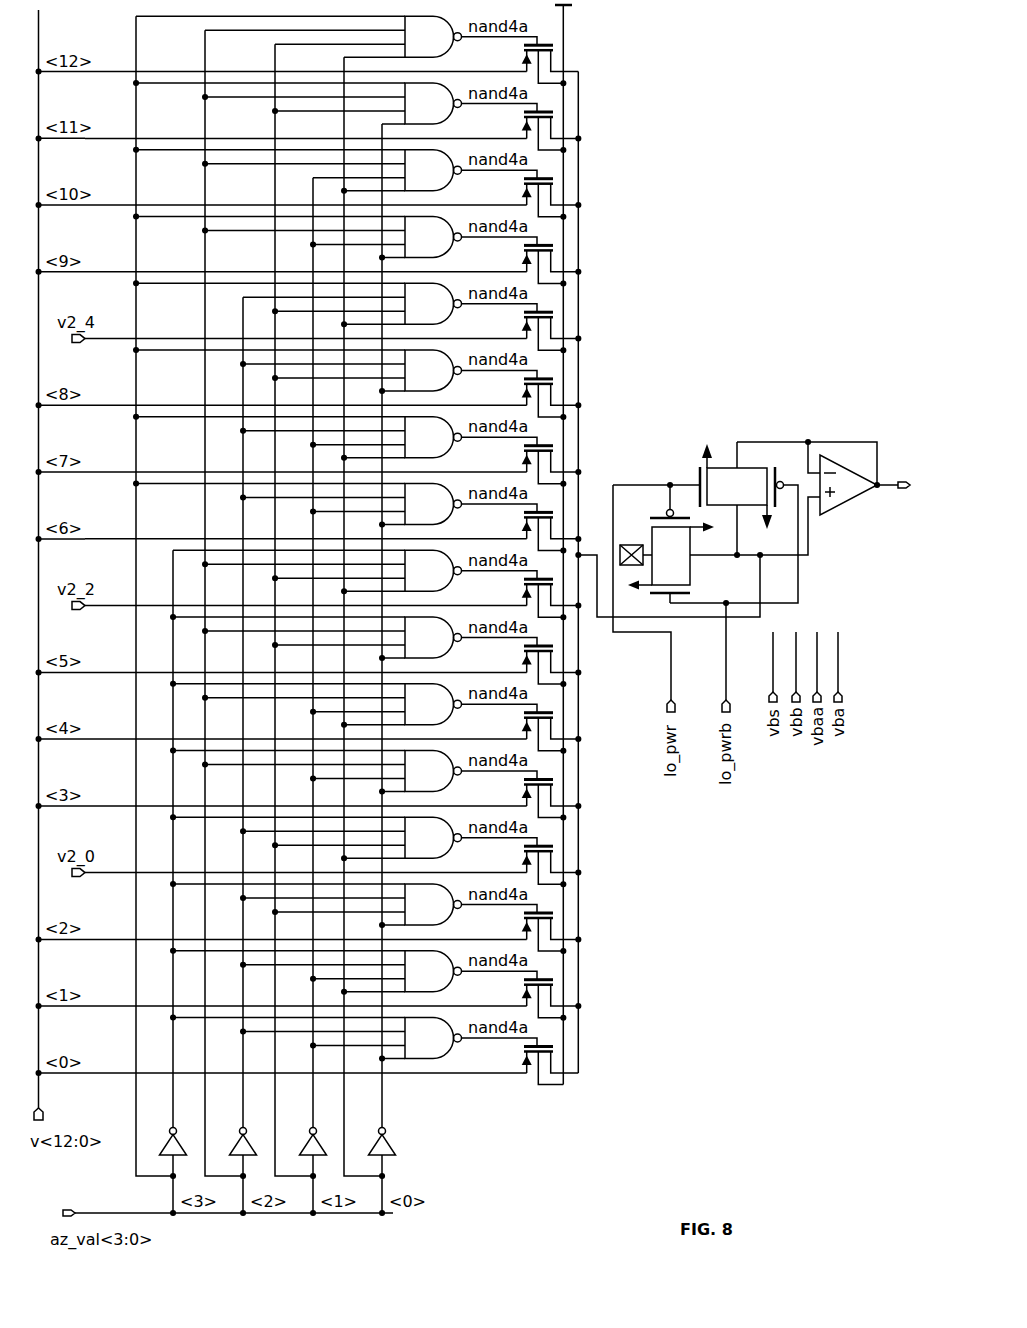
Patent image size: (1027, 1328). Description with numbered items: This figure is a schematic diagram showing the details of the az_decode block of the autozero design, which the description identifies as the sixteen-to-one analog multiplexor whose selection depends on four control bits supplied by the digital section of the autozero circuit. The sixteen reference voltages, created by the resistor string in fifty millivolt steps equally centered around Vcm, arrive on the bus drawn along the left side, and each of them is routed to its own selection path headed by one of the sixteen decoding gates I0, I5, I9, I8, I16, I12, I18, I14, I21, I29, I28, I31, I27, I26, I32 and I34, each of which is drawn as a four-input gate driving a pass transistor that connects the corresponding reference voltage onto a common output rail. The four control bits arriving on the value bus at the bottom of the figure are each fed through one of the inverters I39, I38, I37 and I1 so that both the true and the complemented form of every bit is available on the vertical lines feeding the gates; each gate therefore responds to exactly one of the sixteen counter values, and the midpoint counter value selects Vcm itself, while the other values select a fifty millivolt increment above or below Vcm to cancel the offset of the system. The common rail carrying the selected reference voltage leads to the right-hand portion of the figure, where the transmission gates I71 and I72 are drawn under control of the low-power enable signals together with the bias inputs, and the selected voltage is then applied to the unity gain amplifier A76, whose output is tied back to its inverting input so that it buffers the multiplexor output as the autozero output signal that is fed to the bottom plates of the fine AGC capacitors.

The nand4a gate I0 is at (309, 45).
The nand4a gate I5 is at (309, 112).
The nand4a gate I9 is at (309, 179).
The nand4a gate I8 is at (309, 245).
The nand4a gate I16 is at (331, 312).
The nand4a gate I12 is at (309, 379).
The nand4a gate I18 is at (309, 446).
The nand4a gate I14 is at (309, 512).
The nand4a gate I21 is at (331, 579).
The nand4a gate I29 is at (309, 646).
The nand4a gate I28 is at (309, 713).
The nand4a gate I31 is at (309, 780).
The nand4a gate I27 is at (331, 846).
The nand4a gate I26 is at (309, 913).
The nand4a gate I32 is at (309, 980).
The nand4a gate I34 is at (309, 1047).
The inverter I39 is at (164, 1134).
The inverter I38 is at (234, 1134).
The inverter I37 is at (304, 1134).
The inverter I1 is at (375, 1134).
The transmission gate I71 is at (677, 544).
The transmission gate I72 is at (742, 498).
The operational amplifier A76 is at (865, 492).